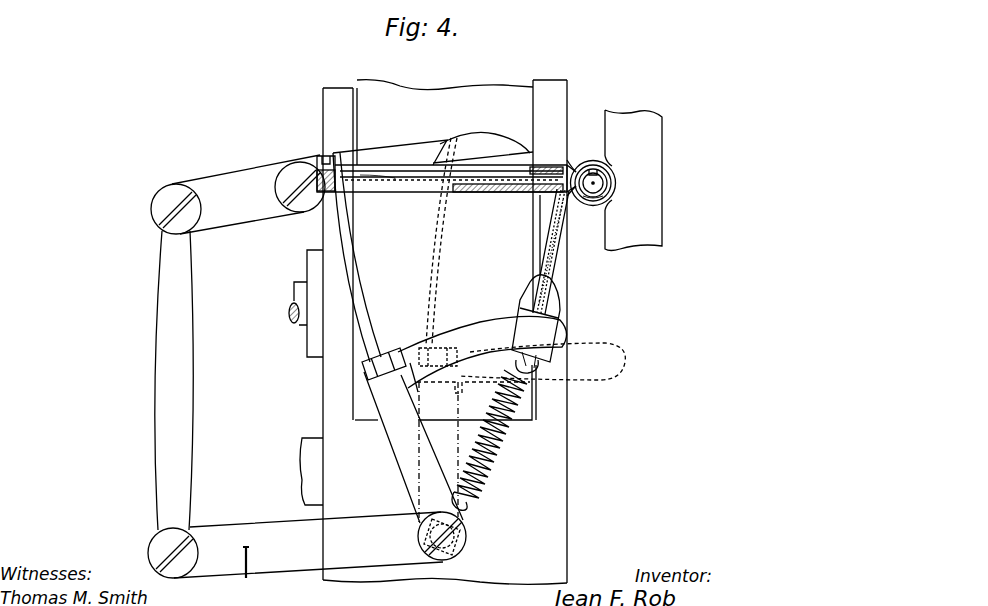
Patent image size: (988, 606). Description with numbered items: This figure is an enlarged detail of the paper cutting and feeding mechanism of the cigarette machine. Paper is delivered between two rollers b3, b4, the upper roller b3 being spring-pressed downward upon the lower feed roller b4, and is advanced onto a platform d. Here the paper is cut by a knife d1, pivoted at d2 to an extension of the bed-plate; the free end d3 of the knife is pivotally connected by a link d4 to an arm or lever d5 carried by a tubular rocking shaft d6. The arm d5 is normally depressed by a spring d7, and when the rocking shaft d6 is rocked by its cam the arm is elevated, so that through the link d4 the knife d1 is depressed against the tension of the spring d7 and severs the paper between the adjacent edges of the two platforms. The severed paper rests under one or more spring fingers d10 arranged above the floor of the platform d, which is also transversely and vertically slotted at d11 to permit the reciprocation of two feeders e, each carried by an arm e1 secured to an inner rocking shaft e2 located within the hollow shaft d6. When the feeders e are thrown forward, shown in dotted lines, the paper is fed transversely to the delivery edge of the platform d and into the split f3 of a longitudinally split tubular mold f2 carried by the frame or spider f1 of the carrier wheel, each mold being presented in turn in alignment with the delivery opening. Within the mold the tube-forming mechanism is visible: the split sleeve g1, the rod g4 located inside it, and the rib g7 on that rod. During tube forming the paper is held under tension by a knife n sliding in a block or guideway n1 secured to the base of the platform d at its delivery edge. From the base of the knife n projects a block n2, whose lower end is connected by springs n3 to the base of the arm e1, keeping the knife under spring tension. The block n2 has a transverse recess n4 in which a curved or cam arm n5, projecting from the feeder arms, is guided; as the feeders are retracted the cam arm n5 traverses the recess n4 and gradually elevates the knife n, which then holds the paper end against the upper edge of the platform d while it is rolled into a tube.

The feed roller b3 is at (378, 84).
The feed roller b4 is at (524, 408).
The platform d is at (501, 193).
The knife d1 is at (411, 148).
The pivot d2 is at (296, 180).
The free end of knife d3 is at (218, 183).
The link d4 is at (152, 383).
The arm or lever d5 is at (244, 527).
The tubular rocking shaft d6 is at (467, 537).
The spring d7 is at (249, 573).
The spring fingers d10 is at (425, 168).
The slot d11 is at (408, 192).
The feeders e is at (352, 268).
The arm e1 is at (370, 370).
The rocking shaft e2 is at (420, 516).
The frame or spider f1 is at (654, 236).
The tubular mold f2 is at (613, 172).
The split or slot f3 is at (570, 170).
The split sleeve g1 is at (604, 195).
The rod g4 is at (603, 184).
The rib g7 is at (597, 178).
The knife n is at (566, 238).
The block or guideway n1 is at (553, 224).
The block n2 is at (555, 315).
The springs n3 is at (492, 452).
The transverse recess n4 is at (523, 320).
The curved or cam arm n5 is at (478, 325).